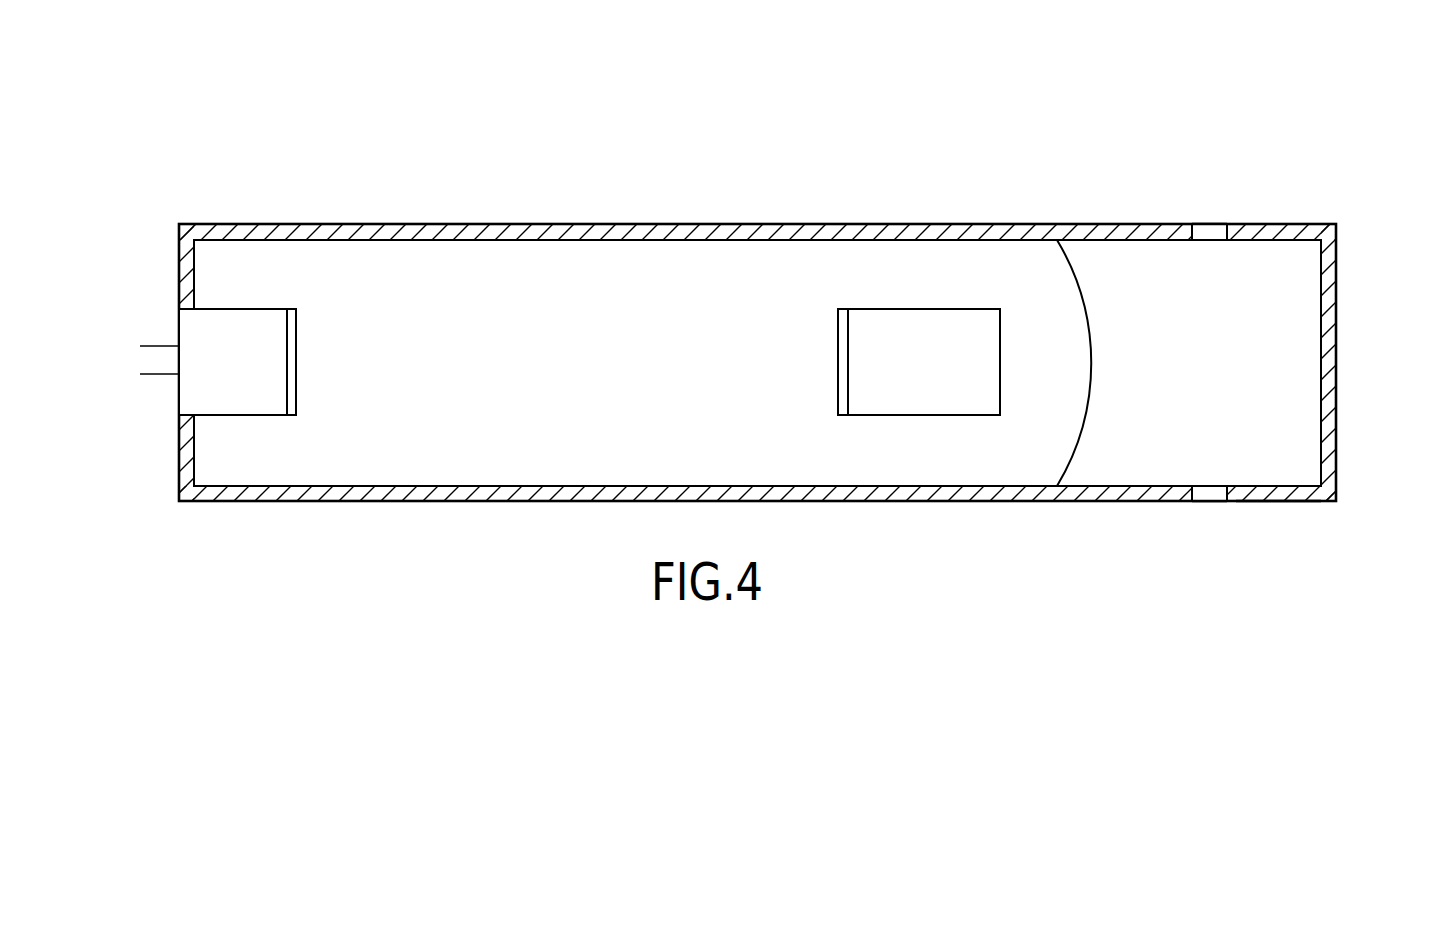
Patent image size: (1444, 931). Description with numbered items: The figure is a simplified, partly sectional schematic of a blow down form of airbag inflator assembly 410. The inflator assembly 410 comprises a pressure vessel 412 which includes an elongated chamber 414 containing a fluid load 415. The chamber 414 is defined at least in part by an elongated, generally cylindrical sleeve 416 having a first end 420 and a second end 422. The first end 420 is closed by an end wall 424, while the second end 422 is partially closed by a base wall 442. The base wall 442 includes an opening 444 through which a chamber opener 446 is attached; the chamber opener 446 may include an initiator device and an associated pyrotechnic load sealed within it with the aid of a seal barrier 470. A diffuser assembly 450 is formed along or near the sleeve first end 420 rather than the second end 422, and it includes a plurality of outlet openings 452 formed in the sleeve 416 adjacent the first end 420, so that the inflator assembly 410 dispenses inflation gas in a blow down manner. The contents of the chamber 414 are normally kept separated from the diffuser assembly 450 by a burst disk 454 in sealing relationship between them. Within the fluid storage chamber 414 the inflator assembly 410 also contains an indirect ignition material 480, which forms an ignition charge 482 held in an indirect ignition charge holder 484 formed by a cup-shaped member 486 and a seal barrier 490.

The inflator assembly 410 is at (757, 316).
The pressure vessel 412 is at (530, 228).
The elongated chamber 414 is at (567, 477).
The fluid load 415 is at (668, 442).
The elongated generally cylindrical sleeve 416 is at (730, 228).
The first end 420 is at (757, 358).
The second end 422 is at (245, 297).
The end wall 424 is at (1338, 425).
The base wall 442 is at (188, 266).
The opening 444 is at (184, 420).
The chamber opener 446 is at (246, 329).
The diffuser assembly 450 is at (1248, 515).
The outlet openings 452 is at (1208, 232).
The burst disk 454 is at (1092, 362).
The seal barrier 470 is at (298, 360).
The indirect ignition material 480 is at (870, 437).
The ignition charge 482 is at (948, 401).
The indirect ignition charge holder 484 is at (870, 420).
The cup-shaped member 486 is at (1084, 363).
The seal barrier 490 is at (838, 362).